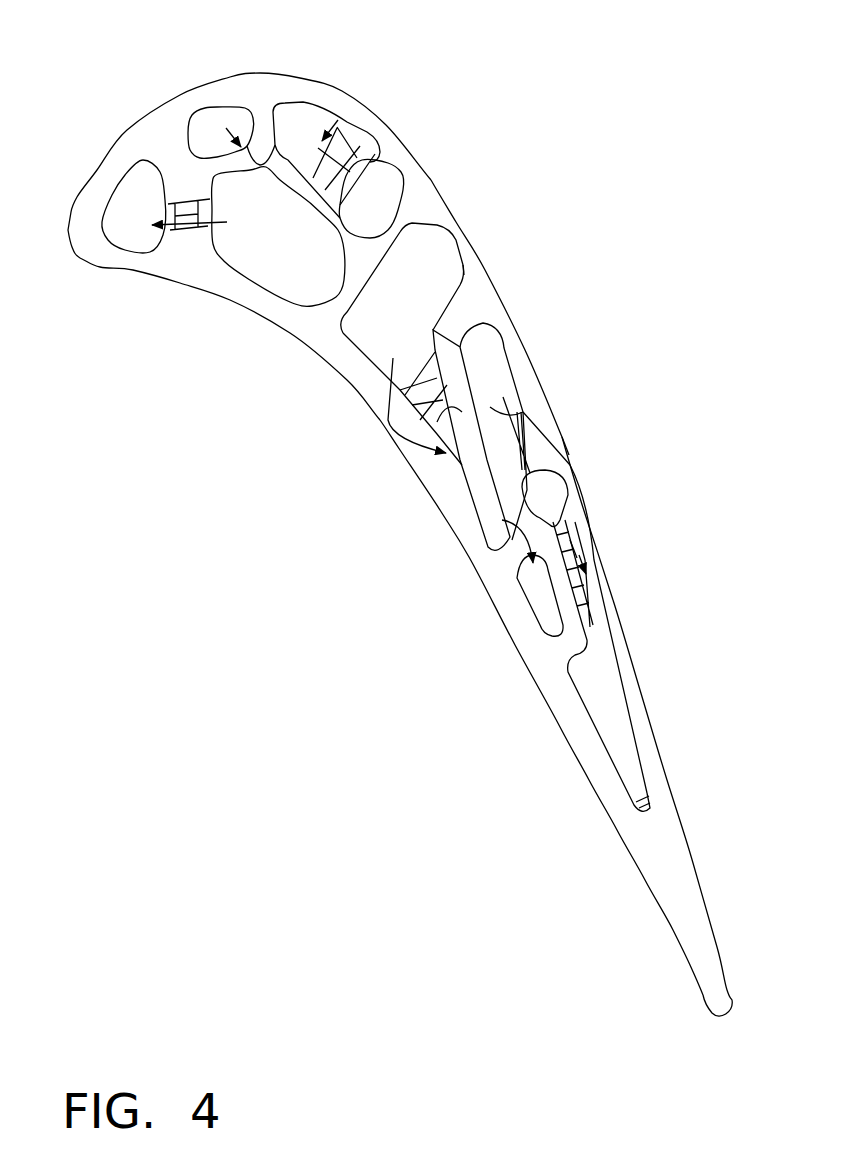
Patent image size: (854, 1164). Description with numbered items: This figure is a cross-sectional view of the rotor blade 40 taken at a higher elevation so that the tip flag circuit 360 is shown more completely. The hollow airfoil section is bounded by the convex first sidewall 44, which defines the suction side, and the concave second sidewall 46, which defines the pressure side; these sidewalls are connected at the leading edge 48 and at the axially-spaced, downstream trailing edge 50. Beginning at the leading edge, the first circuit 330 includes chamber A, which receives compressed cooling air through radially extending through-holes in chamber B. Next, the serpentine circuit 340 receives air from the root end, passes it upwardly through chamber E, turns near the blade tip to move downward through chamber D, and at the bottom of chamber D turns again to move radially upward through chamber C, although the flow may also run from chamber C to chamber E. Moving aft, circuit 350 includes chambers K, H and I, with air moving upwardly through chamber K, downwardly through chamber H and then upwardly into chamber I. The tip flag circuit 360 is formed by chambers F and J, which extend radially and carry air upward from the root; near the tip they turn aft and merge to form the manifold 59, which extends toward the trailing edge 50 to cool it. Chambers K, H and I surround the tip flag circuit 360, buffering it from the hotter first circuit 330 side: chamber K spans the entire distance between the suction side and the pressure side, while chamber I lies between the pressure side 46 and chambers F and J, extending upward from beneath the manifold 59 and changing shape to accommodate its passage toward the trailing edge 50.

The rotor blade 40 is at (422, 551).
The first sidewall 44 is at (559, 317).
The second sidewall 46 is at (391, 450).
The leading edge 48 is at (60, 229).
The trailing edge 50 is at (737, 1035).
The manifold 59 is at (593, 592).
The first circuit 330 is at (183, 280).
The serpentine circuit 340 is at (345, 72).
The circuit 350 is at (472, 281).
The tip flag circuit 360 is at (569, 420).
The chamber A is at (148, 218).
The chamber B is at (277, 247).
The chamber C is at (224, 147).
The chamber D is at (316, 148).
The chamber E is at (380, 212).
The chamber F is at (499, 385).
The chamber H is at (476, 467).
The chamber I is at (549, 605).
The chamber J is at (553, 505).
The chamber K is at (413, 318).